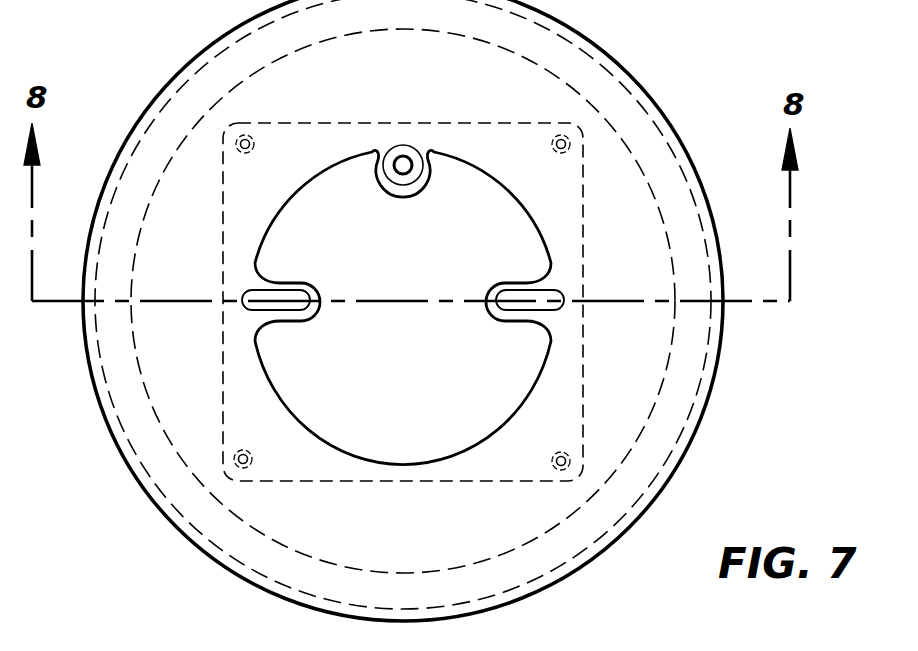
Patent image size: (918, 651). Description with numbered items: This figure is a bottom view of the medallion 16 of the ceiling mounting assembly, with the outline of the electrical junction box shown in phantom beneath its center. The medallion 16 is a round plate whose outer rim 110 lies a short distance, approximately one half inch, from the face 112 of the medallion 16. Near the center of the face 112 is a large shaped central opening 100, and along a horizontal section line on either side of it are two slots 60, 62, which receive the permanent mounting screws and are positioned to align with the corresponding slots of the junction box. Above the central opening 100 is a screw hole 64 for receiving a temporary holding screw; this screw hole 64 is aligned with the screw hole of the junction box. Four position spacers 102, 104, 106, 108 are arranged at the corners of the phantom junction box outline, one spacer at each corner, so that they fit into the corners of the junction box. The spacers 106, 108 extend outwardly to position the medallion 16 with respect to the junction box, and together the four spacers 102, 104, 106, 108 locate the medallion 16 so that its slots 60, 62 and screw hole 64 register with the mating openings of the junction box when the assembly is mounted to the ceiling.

The medallion 16 is at (694, 440).
The outer rim 110 is at (618, 66).
The face 112 is at (658, 346).
The central opening 100 is at (424, 390).
The screw hole 64 is at (400, 147).
The slot 60 is at (285, 297).
The slot 62 is at (517, 297).
The position spacer 102 is at (243, 450).
The position spacer 104 is at (562, 452).
The position spacer 106 is at (250, 146).
The position spacer 108 is at (556, 146).